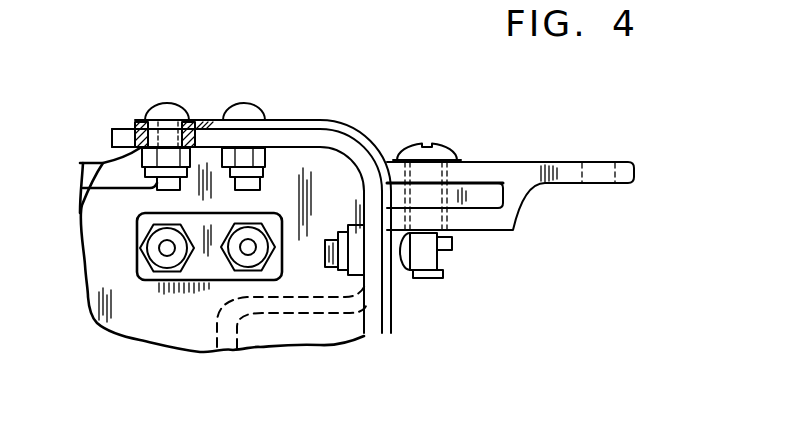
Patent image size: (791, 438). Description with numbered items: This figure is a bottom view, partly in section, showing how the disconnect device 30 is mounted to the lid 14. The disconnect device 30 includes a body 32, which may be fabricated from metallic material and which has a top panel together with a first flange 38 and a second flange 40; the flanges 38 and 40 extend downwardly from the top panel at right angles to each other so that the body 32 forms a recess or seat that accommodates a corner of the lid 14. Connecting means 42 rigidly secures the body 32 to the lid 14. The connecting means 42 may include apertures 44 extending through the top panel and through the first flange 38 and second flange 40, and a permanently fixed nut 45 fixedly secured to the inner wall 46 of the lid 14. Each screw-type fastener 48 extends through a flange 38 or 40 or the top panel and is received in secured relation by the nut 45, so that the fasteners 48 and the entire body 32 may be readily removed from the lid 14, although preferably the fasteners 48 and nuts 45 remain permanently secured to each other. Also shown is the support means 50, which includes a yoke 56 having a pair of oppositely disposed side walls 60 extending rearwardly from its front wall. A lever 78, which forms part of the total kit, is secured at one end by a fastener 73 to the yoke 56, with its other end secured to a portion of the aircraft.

The lid 14 is at (138, 346).
The disconnect device 30 is at (277, 195).
The body 32 is at (356, 150).
The first flange 38 is at (198, 119).
The second flange 40 is at (386, 290).
The connecting means 42 is at (165, 94).
The apertures 44 is at (148, 122).
The permanently fixed nut 45 is at (142, 160).
The inner wall 46 is at (334, 160).
The screw-type fasteners 48 is at (250, 103).
The support means 50 is at (535, 183).
The yoke 56 is at (480, 201).
The side walls 60 is at (484, 175).
The fastener 73 is at (448, 144).
The lever 78 is at (627, 164).